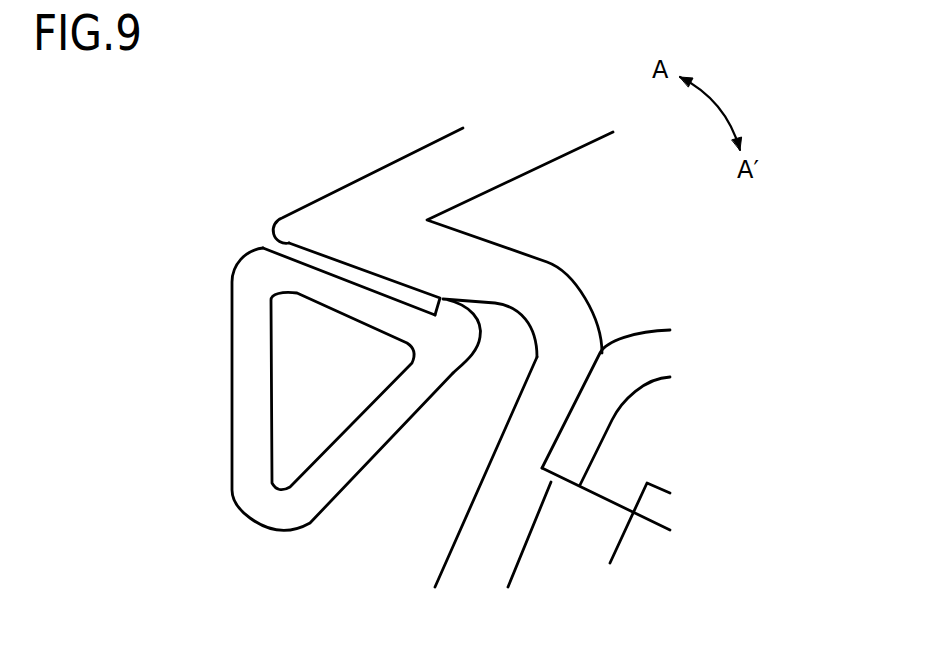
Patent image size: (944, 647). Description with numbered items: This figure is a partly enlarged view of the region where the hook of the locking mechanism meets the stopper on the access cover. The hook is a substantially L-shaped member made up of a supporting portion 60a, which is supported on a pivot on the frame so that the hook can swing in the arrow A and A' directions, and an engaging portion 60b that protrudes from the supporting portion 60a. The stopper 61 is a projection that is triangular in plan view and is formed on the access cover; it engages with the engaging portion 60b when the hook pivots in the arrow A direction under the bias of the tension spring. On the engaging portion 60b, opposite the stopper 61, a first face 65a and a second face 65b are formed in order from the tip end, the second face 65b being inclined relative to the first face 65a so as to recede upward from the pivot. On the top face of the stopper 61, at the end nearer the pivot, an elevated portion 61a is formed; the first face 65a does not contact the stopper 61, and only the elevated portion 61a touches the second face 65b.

The supporting portion 60a is at (457, 563).
The engaging portion 60b is at (398, 263).
The stopper 61 is at (236, 384).
The elevated portion 61a is at (452, 303).
The first face 65a is at (357, 263).
The second face 65b is at (495, 303).